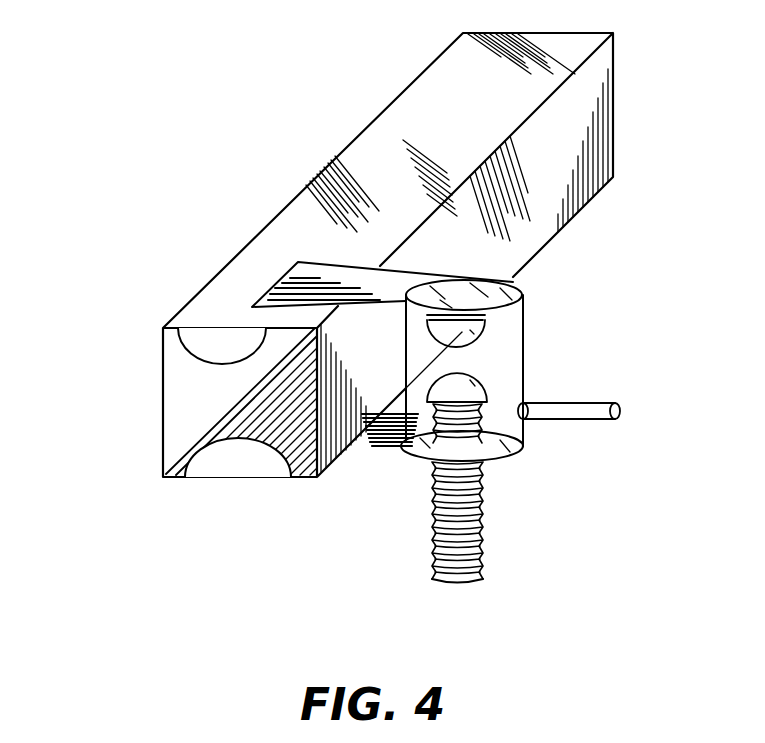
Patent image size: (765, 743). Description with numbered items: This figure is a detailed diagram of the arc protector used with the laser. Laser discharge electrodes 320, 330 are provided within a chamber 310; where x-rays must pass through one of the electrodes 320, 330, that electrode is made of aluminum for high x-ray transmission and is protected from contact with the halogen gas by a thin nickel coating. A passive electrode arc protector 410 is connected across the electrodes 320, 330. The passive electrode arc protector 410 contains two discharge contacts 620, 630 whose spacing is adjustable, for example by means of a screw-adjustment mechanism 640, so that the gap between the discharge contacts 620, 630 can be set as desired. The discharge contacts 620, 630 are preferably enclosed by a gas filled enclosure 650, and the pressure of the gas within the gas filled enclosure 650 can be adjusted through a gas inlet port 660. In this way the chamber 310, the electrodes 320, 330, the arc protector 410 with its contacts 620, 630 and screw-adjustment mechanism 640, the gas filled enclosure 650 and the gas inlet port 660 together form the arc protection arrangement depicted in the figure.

The chamber 310 is at (170, 284).
The laser discharge electrode 320 is at (176, 343).
The laser discharge electrode 330 is at (172, 463).
The passive electrode arc protector 410 is at (562, 349).
The discharge contact 620 is at (489, 334).
The discharge contact 630 is at (491, 381).
The screw-adjustment mechanism 640 is at (490, 524).
The gas filled enclosure 650 is at (528, 447).
The gas inlet port 660 is at (636, 413).